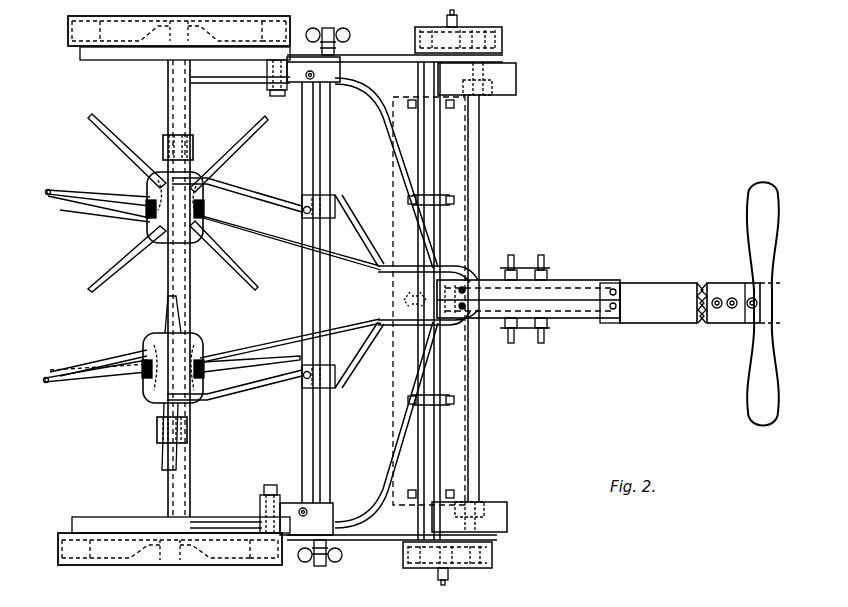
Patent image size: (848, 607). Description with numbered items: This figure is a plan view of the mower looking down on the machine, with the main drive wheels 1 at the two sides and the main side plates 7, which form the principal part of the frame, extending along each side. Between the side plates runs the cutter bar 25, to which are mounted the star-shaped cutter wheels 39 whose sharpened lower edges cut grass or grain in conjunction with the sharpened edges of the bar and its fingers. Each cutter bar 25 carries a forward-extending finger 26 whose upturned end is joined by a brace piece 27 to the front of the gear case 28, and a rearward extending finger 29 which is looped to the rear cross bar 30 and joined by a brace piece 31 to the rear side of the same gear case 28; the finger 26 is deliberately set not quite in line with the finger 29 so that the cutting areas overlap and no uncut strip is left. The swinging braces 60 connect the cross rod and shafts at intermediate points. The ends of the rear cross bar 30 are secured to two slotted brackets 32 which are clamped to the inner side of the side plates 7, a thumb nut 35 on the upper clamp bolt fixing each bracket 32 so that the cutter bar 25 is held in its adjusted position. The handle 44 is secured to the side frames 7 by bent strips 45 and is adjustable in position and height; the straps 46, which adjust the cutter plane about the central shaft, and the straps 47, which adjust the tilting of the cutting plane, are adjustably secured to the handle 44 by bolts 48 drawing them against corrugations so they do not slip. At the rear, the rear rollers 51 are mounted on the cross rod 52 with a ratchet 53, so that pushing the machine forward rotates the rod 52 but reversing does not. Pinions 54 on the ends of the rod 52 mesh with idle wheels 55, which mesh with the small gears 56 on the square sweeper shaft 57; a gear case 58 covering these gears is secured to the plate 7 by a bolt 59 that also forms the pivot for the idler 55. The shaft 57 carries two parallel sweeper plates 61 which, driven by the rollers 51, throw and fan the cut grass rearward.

The main drive wheel 1 is at (226, 22).
The main side plate 7 is at (378, 55).
The cutter bar 25 is at (168, 112).
The forward-extending finger 26 is at (104, 188).
The brace piece 27 is at (86, 202).
The gear case 28 is at (205, 237).
The rearward extending finger 29 is at (280, 205).
The rear cross bar 30 is at (331, 152).
The brace piece 31 is at (260, 220).
The slotted bracket 32 is at (341, 68).
The thumb nut 35 is at (346, 30).
The cutter wheel 39 is at (195, 416).
The handle 44 is at (690, 303).
The bent strip 45 is at (381, 118).
The strap 46 is at (362, 298).
The strap 47 is at (352, 208).
The bolt 48 is at (545, 320).
The rear roller 51 is at (517, 78).
The cross rod 52 is at (480, 420).
The ratchet 53 is at (490, 96).
The pinion 54 is at (503, 38).
The idle wheel 55 is at (476, 34).
The small gear 56 is at (418, 27).
The sweeper shaft 57 is at (435, 76).
The gear case 58 is at (498, 30).
The bolt 59 is at (460, 12).
The swinging brace 60 is at (194, 138).
The sweeper plate 61 is at (418, 128).